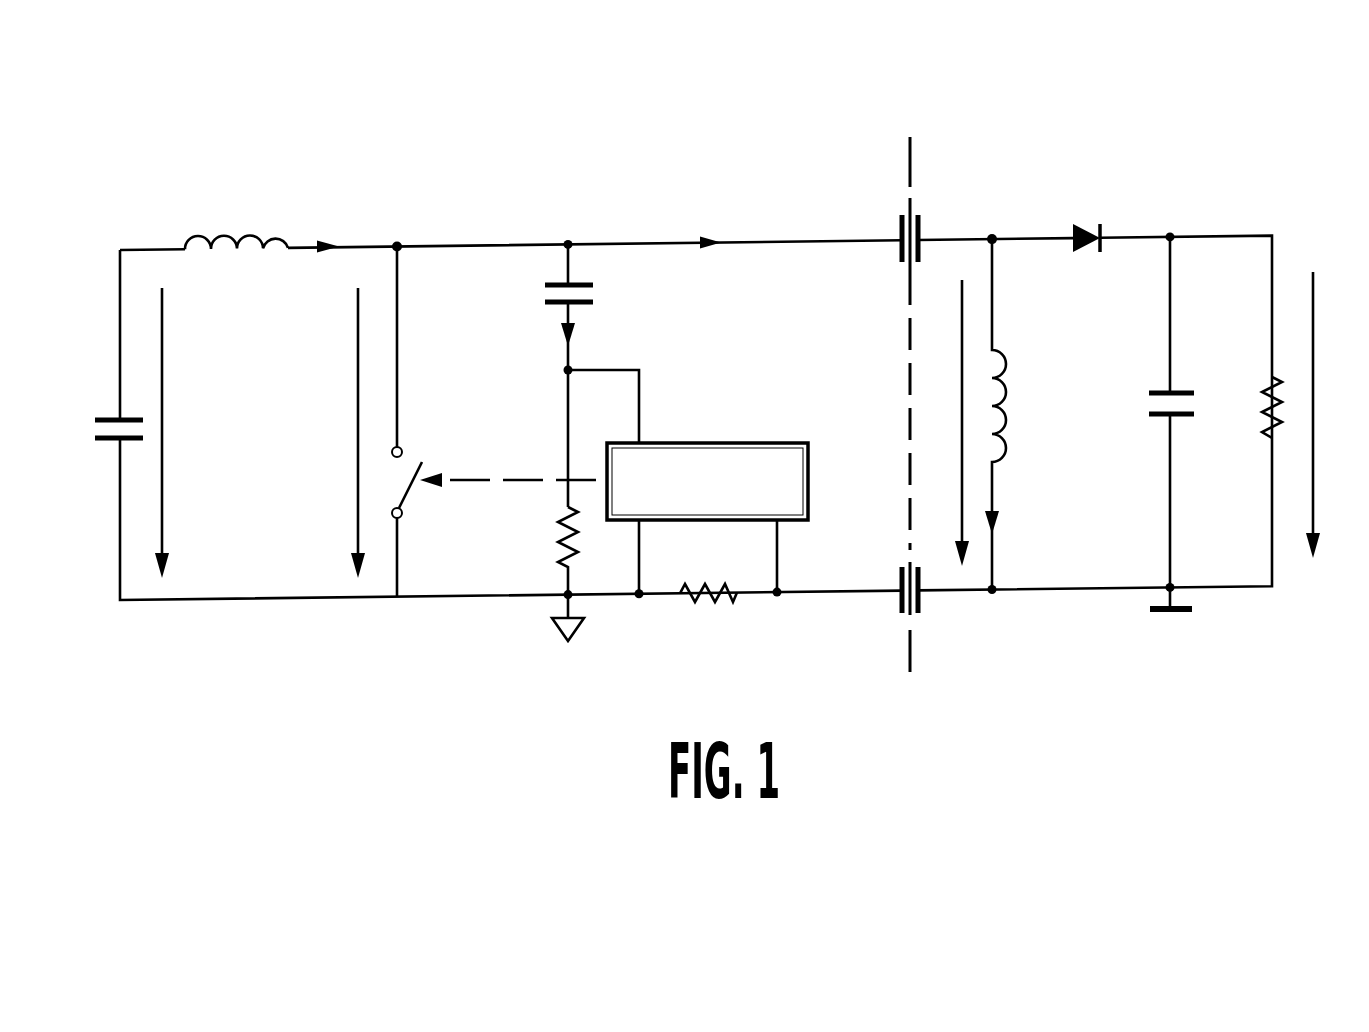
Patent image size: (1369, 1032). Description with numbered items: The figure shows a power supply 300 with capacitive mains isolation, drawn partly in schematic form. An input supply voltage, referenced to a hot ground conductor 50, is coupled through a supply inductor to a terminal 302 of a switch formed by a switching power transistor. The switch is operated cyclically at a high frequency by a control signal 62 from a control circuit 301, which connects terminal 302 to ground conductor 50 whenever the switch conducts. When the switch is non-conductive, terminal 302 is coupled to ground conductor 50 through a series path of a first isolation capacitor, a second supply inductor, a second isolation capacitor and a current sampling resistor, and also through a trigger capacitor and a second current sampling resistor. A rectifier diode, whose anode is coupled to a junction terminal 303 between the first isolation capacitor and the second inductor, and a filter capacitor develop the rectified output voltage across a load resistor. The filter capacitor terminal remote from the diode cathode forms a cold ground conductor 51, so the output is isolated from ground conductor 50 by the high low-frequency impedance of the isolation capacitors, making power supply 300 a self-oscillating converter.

The power supply 300 is at (732, 648).
The control circuit 301 is at (708, 443).
The terminal 302 is at (397, 246).
The junction terminal 303 is at (992, 239).
The control signal 62 is at (482, 480).
The hot ground conductor 50 is at (554, 621).
The cold ground conductor 51 is at (1176, 613).